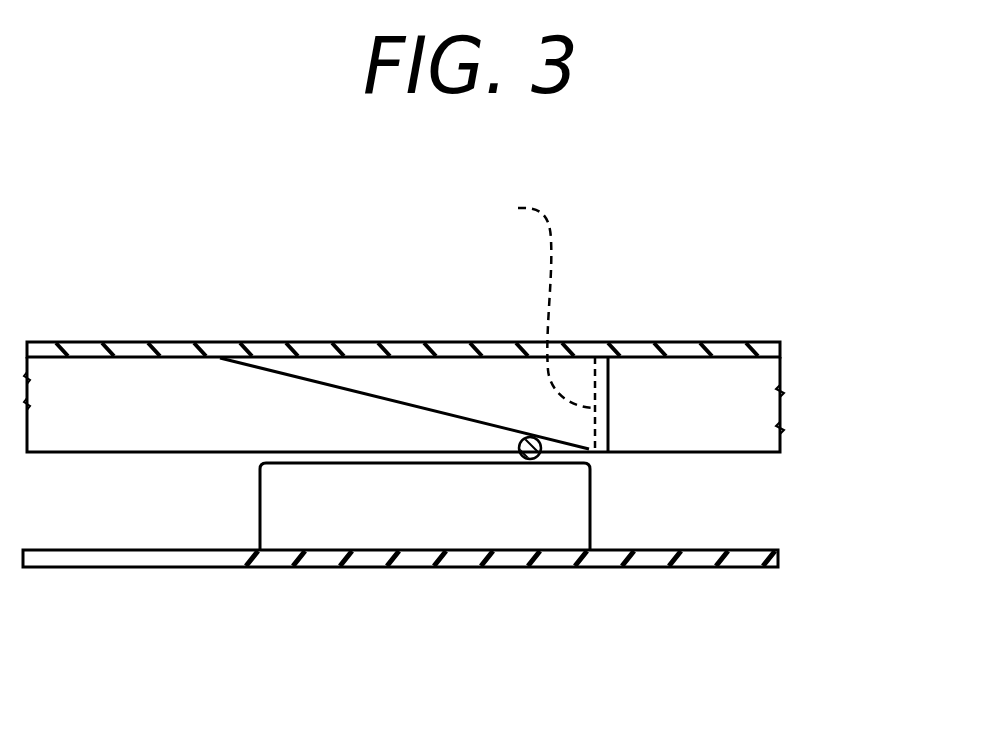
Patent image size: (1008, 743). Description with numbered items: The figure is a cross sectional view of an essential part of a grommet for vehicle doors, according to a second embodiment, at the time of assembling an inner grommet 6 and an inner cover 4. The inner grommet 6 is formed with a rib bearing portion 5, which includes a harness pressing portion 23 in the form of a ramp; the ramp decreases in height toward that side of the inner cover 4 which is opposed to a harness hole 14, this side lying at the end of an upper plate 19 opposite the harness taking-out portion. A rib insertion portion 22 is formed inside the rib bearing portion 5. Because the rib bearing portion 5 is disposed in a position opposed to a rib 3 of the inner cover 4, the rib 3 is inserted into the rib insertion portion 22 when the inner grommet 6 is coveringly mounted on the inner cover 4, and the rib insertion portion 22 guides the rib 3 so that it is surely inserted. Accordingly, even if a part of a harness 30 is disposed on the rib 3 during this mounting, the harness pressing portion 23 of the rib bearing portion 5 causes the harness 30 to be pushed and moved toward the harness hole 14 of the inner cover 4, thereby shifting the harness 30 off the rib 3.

The rib 3 is at (591, 500).
The inner cover 4 is at (740, 568).
The rib bearing portion 5 is at (610, 410).
The inner grommet 6 is at (680, 342).
The harness hole 14 is at (213, 557).
The upper plate 19 is at (267, 343).
The rib insertion portion 22 is at (529, 293).
The harness pressing portion 23 is at (405, 405).
The harness 30 is at (519, 440).